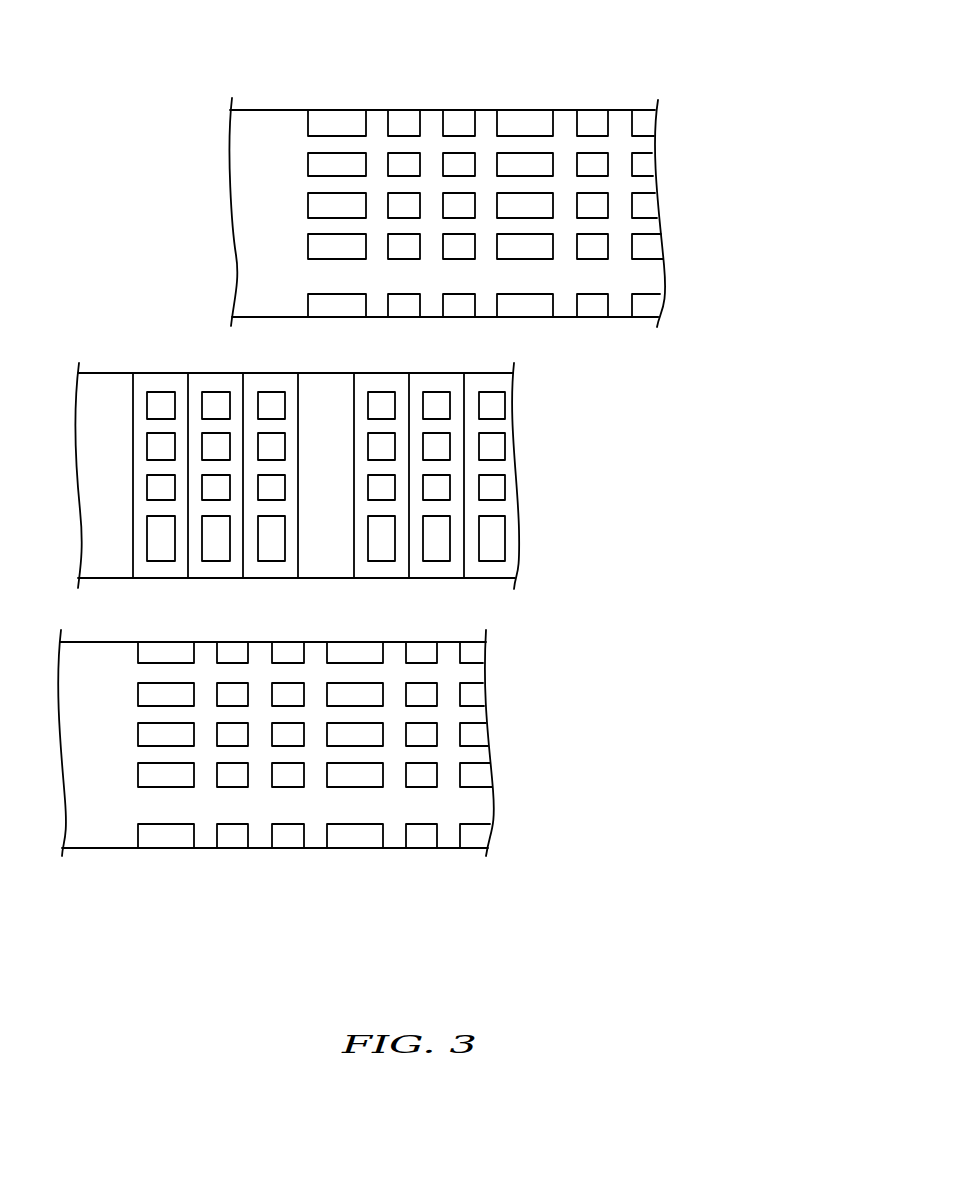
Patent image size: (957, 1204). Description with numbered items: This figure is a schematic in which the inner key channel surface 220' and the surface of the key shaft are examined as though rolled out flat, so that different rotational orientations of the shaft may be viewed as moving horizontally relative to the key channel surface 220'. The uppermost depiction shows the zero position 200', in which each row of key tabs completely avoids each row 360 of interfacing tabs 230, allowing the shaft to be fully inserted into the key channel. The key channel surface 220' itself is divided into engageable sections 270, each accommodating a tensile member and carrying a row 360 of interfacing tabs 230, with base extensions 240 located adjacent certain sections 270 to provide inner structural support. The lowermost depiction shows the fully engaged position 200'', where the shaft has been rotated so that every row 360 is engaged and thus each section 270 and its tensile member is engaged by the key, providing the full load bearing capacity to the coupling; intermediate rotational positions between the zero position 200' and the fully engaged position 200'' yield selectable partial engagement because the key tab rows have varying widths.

The zero position 200' is at (528, 181).
The fully engaged position 200'' is at (377, 765).
The key channel surface 220' is at (316, 463).
The interfacing tab 230 is at (436, 442).
The base extension 240 is at (113, 567).
The engageable section 270 is at (217, 567).
The row of interfacing tabs 360 is at (385, 564).